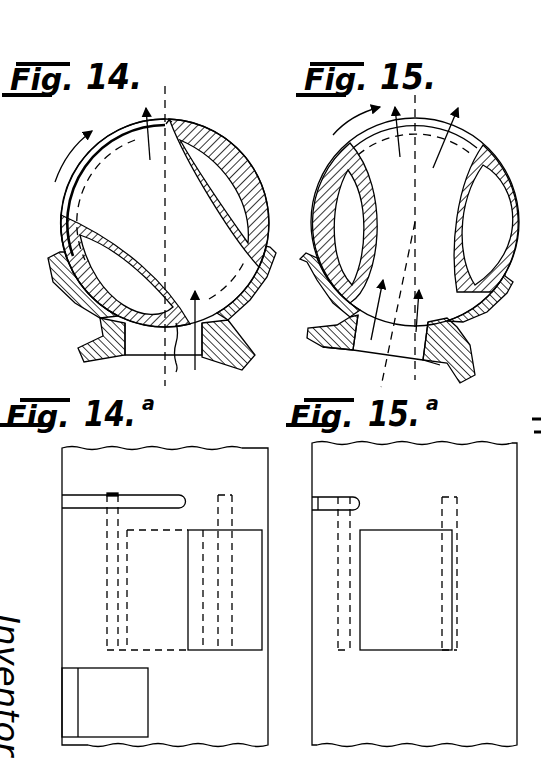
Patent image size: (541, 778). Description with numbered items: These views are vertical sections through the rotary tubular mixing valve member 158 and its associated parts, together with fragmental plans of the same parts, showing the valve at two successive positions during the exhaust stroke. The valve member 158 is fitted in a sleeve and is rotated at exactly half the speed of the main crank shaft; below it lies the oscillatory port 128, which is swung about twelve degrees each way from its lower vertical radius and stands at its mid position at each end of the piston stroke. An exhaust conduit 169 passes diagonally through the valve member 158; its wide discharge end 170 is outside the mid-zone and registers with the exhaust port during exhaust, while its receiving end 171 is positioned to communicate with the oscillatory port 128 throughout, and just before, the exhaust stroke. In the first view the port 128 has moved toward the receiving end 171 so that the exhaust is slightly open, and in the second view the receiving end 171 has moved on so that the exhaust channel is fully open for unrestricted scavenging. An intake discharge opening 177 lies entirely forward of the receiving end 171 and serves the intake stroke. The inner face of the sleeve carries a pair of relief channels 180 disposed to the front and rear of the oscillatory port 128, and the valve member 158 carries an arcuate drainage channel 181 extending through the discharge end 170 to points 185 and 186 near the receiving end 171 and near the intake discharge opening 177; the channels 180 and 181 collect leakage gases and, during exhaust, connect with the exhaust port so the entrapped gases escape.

In FIG. 14, the oscillatory port 128 is at (163, 339).
In FIG. 15, the oscillatory port 128 is at (381, 340).
In FIG. 14A, the rotary tubular mixing valve member 158 is at (165, 597).
In FIG. 14, the exhaust conduit 169 is at (165, 223).
In FIG. 15, the exhaust conduit 169 is at (415, 222).
In FIG. 14, the discharge end of exhaust conduit 170 is at (161, 219).
In FIG. 14, the receiving end of exhaust conduit 171 is at (200, 297).
In FIG. 15, the receiving end of exhaust conduit 171 is at (408, 302).
In FIG. 14A, the receiving end of exhaust conduit 171 is at (225, 590).
In FIG. 15A, the receiving end of exhaust conduit 171 is at (406, 590).
In FIG. 14, the intake discharge opening 177 is at (227, 189).
In FIG. 14, the relief channels 180 is at (153, 308).
In FIG. 15, the relief channels 180 is at (406, 318).
In FIG. 14A, the relief channels 180 is at (162, 568).
In FIG. 15A, the relief channels 180 is at (457, 581).
In FIG. 14, the arcuate drainage channel 181 is at (73, 195).
In FIG. 14A, the arcuate drainage channel 181 is at (160, 498).
In FIG. 14, the end point of drainage channel 185 is at (195, 340).
In FIG. 14, the end point of drainage channel 186 is at (201, 105).